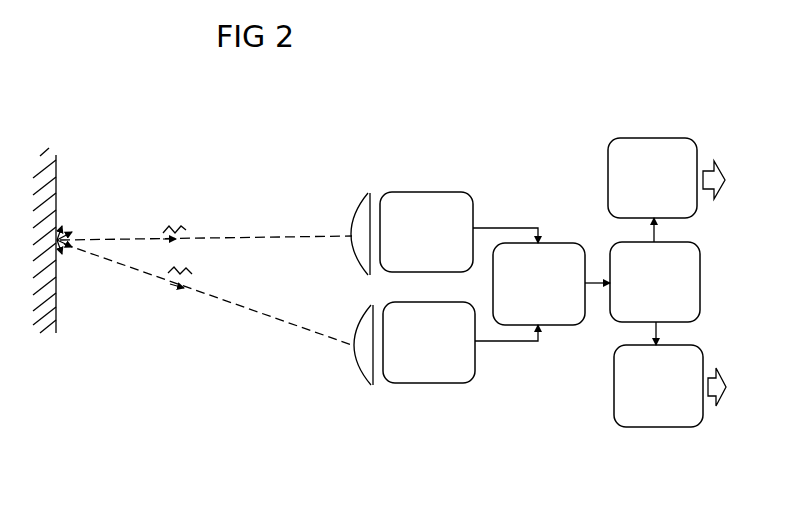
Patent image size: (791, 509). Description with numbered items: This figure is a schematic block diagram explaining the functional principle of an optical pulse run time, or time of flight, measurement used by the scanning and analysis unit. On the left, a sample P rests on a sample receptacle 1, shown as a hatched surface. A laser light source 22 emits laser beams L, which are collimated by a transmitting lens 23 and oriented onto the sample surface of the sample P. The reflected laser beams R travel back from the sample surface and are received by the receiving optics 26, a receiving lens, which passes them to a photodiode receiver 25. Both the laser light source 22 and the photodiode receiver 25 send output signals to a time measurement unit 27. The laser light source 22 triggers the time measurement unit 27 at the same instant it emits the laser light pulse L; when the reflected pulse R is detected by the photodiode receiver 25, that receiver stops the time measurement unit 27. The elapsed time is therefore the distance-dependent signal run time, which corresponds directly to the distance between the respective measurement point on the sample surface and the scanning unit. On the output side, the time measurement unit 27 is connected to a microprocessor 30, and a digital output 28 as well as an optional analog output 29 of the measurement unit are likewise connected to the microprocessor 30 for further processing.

The sample receptacle 1 is at (50, 315).
The sample P is at (57, 174).
The laser beams L is at (165, 227).
The reflected laser beams R is at (182, 294).
The laser light source 22 is at (425, 200).
The transmitting lens 23 is at (360, 217).
The photodiode receiver 25 is at (432, 383).
The receiving optics 26 is at (362, 370).
The time measurement unit 27 is at (558, 325).
The digital output 28 is at (665, 150).
The analog output 29 is at (657, 415).
The microprocessor 30 is at (692, 293).